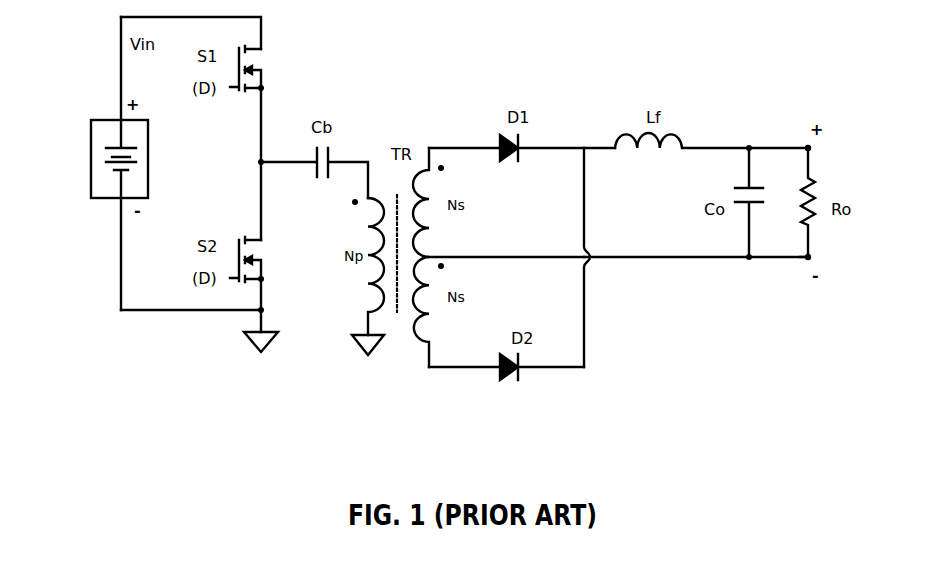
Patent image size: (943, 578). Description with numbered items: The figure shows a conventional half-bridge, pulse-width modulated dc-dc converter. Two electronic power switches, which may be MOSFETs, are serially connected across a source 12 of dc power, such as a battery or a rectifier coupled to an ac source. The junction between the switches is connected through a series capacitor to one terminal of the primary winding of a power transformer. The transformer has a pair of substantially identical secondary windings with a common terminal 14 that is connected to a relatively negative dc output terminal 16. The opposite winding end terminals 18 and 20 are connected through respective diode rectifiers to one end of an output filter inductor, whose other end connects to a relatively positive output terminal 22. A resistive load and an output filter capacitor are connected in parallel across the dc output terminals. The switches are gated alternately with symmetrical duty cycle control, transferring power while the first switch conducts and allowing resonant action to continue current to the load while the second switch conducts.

The source of dc power 12 is at (91, 165).
The common terminal 14 is at (462, 257).
The relatively negative dc output terminal 16 is at (808, 257).
The winding end terminal 18 is at (453, 148).
The winding end terminal 20 is at (460, 368).
The relatively positive output terminal 22 is at (808, 148).